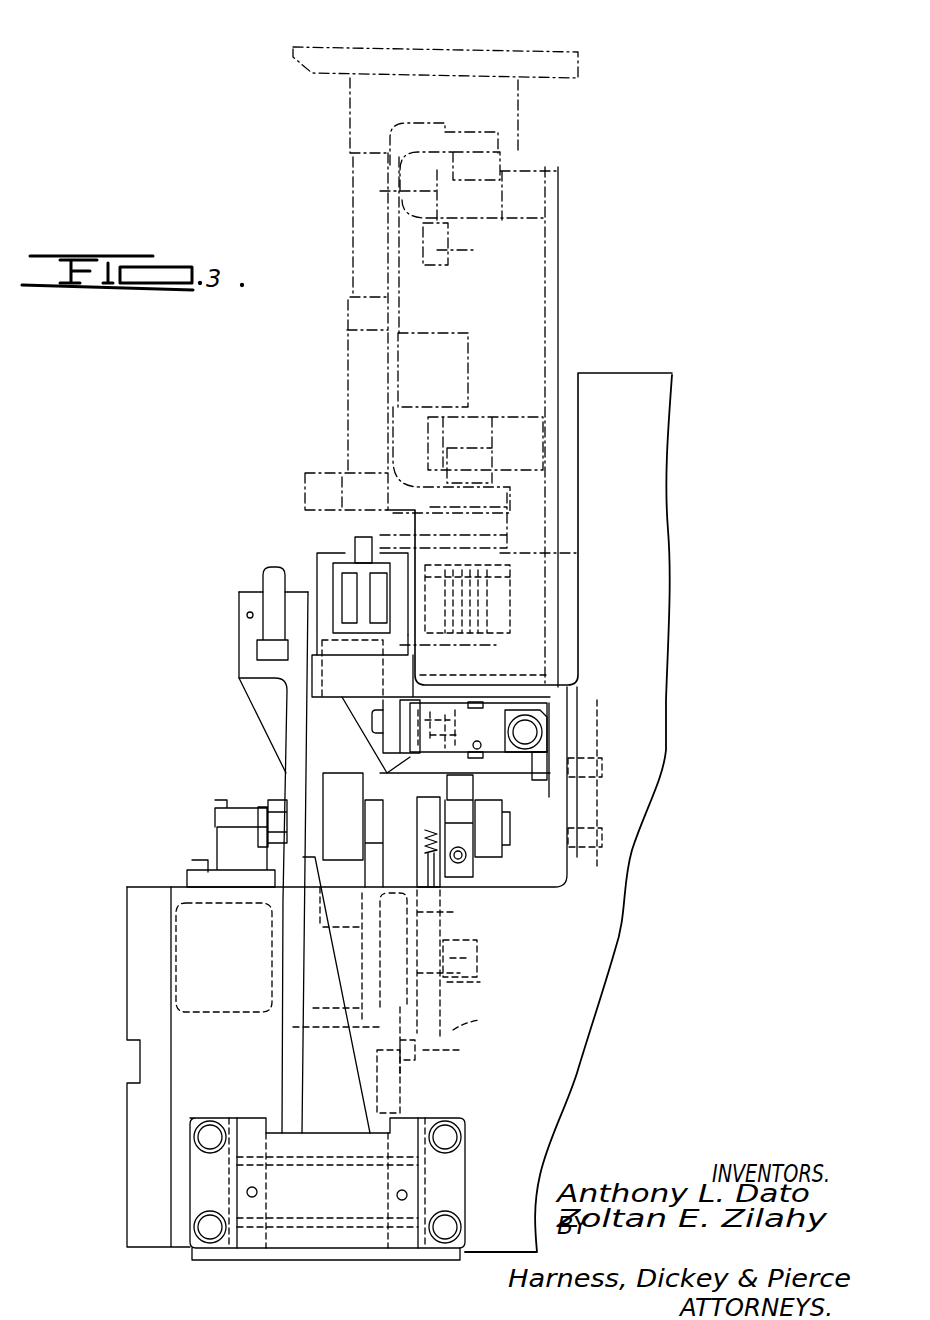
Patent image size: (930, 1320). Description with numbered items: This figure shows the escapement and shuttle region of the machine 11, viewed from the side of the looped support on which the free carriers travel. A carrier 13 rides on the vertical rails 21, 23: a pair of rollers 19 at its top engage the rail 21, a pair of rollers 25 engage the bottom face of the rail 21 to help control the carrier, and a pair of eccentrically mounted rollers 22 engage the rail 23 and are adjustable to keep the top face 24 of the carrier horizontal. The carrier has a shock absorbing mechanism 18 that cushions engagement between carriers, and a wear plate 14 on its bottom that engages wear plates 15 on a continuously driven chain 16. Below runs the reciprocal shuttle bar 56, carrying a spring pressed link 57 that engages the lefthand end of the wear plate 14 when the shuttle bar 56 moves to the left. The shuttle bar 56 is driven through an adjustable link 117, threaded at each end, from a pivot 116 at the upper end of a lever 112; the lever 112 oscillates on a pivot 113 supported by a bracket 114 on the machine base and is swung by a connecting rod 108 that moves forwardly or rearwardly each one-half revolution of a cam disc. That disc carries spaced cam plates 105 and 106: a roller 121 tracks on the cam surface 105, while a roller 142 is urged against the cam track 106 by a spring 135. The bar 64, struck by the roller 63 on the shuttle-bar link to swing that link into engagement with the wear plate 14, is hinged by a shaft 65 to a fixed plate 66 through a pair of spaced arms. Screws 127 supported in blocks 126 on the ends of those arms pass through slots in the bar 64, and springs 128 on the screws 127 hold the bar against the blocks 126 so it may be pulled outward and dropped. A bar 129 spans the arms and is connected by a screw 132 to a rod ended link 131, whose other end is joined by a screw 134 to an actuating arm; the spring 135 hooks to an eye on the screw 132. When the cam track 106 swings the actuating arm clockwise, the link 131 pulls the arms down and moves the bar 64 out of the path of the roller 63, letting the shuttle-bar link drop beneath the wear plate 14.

The top face 24 is at (460, 71).
The machine 11 is at (352, 352).
The carrier 13 is at (500, 143).
The rollers 19 is at (495, 163).
The rail 21 is at (380, 192).
The rollers 25 is at (452, 250).
The shock absorbing mechanism 18 is at (460, 342).
The eccentrically mounted rollers 22 is at (460, 463).
The rail 23 is at (530, 443).
The wear plate 14 is at (540, 502).
The wear plates 15 is at (580, 553).
The chain 16 is at (486, 603).
The spring pressed link 57 is at (355, 552).
The shuttle bar 56 is at (333, 565).
The adjustable link 117 is at (263, 585).
The pivot 116 is at (240, 615).
The lever 112 is at (263, 703).
The connecting rod 108 is at (323, 780).
The screws 127 is at (373, 718).
The bar 64 is at (385, 738).
The blocks 126 is at (347, 816).
The springs 128 is at (400, 832).
The spring 135 is at (427, 843).
The screw 132 is at (490, 760).
The screw 134 is at (468, 852).
The rod ended link 131 is at (470, 868).
The bar 129 is at (478, 703).
The roller 63 is at (478, 696).
The shaft 65 is at (532, 725).
The fixed plate 66 is at (567, 737).
The roller 142 is at (487, 992).
The cam plate 106 is at (467, 1043).
The roller 121 is at (417, 1103).
The cam plate 105 is at (387, 1063).
The bracket 114 is at (230, 1232).
The pivot 113 is at (313, 1270).